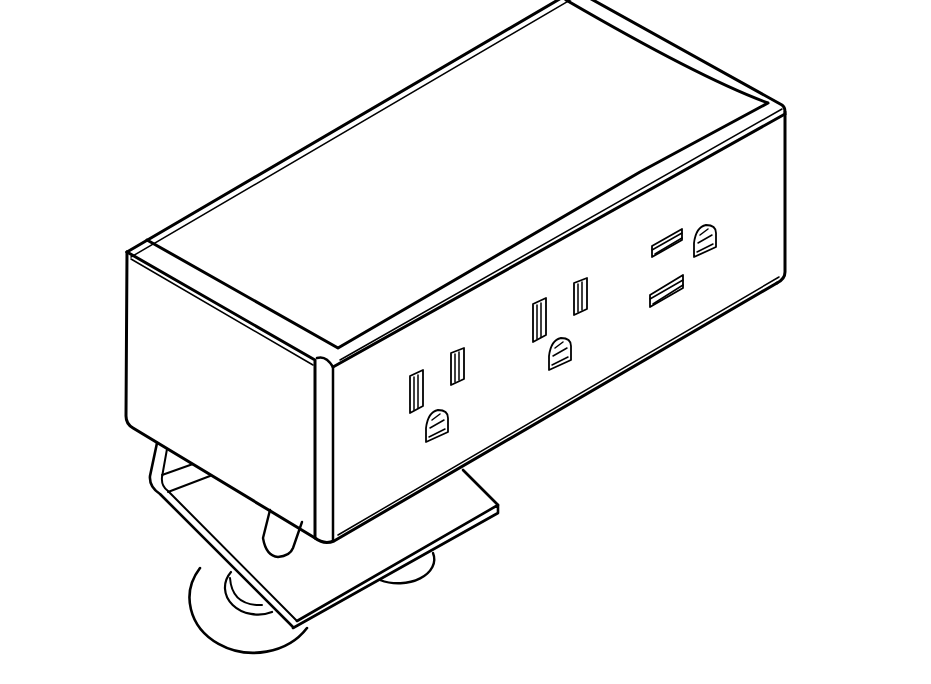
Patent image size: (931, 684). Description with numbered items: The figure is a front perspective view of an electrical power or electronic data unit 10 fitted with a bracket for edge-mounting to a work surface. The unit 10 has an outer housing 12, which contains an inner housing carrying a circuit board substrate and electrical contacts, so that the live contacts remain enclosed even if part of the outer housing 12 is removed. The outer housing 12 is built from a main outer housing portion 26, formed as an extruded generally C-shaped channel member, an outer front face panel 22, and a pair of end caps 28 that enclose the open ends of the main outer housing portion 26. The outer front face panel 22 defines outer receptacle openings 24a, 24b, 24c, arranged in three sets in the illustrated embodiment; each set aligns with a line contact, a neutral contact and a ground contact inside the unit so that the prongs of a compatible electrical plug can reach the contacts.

The electrical power or electronic data unit 10 is at (216, 73).
The outer housing 12 is at (380, 106).
The outer front face panel 22 is at (766, 178).
The outer receptacle opening 24a is at (465, 365).
The outer receptacle opening 24b is at (410, 397).
The outer receptacle opening 24c is at (435, 439).
The main outer housing portion 26 is at (225, 228).
The end caps 28 is at (140, 355).